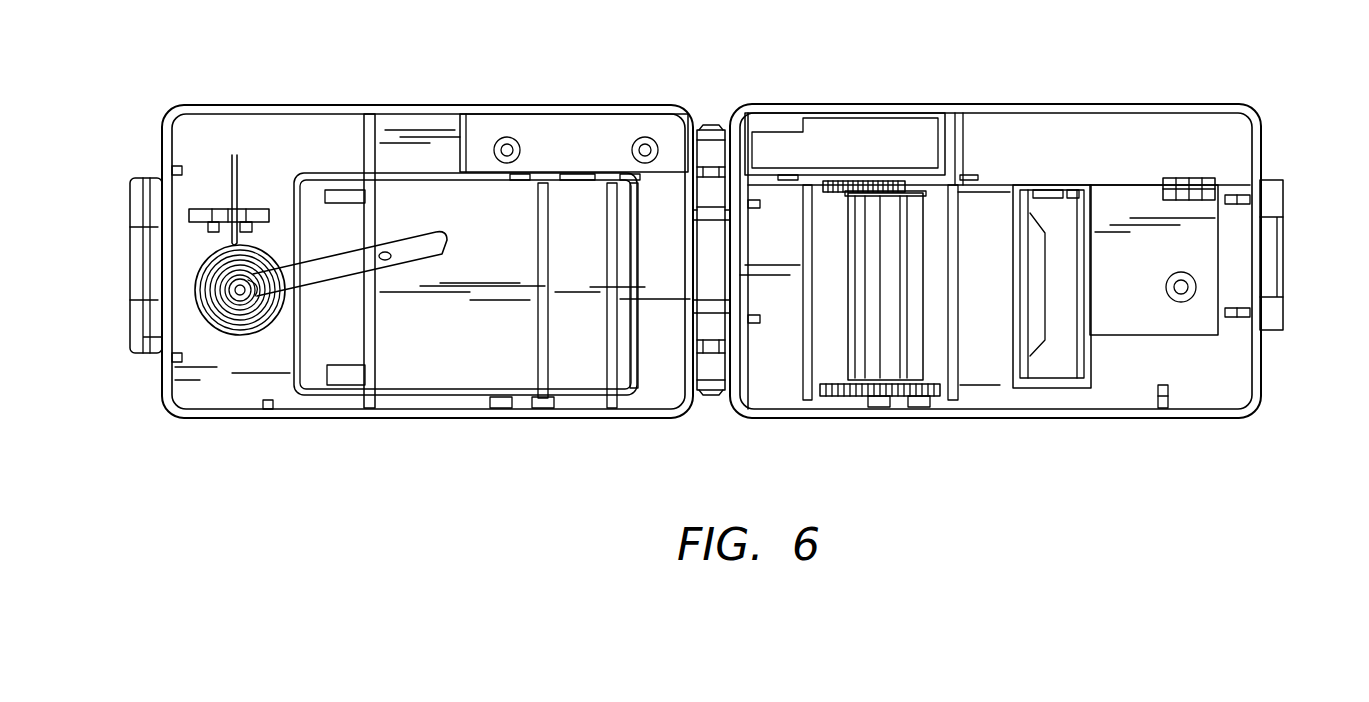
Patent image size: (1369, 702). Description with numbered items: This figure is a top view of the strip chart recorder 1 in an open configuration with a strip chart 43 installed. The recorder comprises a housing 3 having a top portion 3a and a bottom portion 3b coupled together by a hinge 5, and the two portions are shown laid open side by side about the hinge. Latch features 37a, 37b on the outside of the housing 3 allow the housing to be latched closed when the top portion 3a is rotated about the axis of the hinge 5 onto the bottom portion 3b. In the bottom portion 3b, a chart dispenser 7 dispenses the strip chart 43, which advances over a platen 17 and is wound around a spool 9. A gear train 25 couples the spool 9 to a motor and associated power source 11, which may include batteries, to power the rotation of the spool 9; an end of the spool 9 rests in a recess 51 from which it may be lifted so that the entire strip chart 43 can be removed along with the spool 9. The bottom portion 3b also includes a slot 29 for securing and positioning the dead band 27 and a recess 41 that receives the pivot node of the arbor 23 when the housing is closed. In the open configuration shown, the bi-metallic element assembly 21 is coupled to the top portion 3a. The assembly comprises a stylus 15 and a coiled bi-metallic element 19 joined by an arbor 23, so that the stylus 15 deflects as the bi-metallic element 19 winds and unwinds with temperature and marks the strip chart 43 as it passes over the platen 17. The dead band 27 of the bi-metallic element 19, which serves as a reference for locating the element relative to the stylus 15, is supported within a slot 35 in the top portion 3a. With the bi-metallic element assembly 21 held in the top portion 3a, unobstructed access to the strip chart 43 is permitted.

The strip chart recorder 1 is at (597, 77).
The housing 3 is at (456, 95).
The top portion 3a is at (610, 420).
The bottom portion 3b is at (1120, 101).
The hinge 5 is at (703, 125).
The chart dispenser 7 is at (1067, 372).
The spool 9 is at (850, 362).
The motor and associated power source 11 is at (945, 125).
The stylus 15 is at (432, 262).
The platen 17 is at (997, 377).
The bi-metallic element 19 is at (212, 318).
The bi-metallic element assembly 21 is at (227, 357).
The arbor 23 is at (215, 280).
The gear train 25 is at (845, 190).
The dead band 27 is at (237, 180).
The slot 29 is at (1188, 190).
The slot 35 is at (234, 214).
The first latch feature 37a is at (148, 178).
The second latch feature 37b is at (1280, 180).
The recess 41 is at (1183, 287).
The strip chart 43 is at (920, 190).
The recess 51 is at (880, 400).